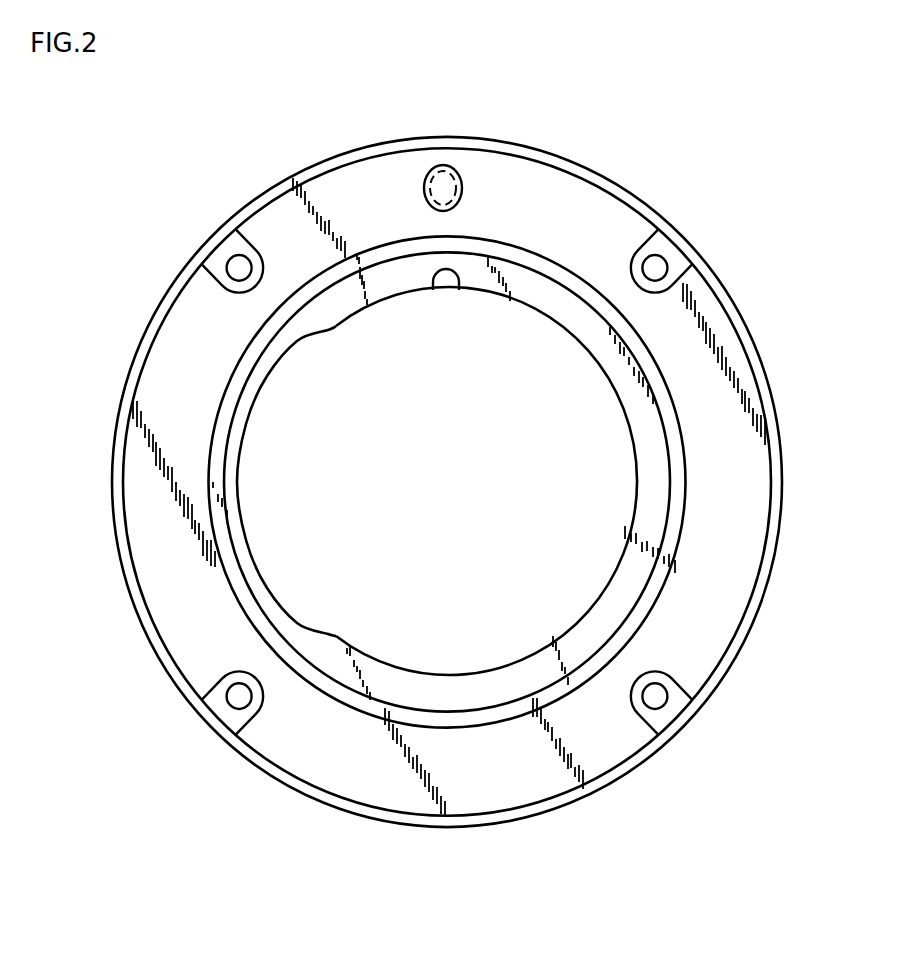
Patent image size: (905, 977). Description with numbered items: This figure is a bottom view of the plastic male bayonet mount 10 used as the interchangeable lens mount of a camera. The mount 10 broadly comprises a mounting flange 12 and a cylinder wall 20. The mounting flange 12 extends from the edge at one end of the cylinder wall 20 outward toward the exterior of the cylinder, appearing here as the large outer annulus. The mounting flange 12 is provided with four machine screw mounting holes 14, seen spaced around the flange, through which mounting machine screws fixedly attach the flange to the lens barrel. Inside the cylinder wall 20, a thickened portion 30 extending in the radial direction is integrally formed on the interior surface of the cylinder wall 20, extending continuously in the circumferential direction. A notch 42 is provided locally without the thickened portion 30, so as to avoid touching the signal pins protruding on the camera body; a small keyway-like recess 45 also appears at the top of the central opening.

The mount 10 is at (574, 153).
The mounting flange 12 is at (605, 215).
The machine screw mounting holes 14 is at (666, 261).
The cylinder wall 20 is at (596, 318).
The thickened portion 30 is at (648, 487).
The notch 42 is at (240, 484).
The keyway notch 45 is at (450, 289).